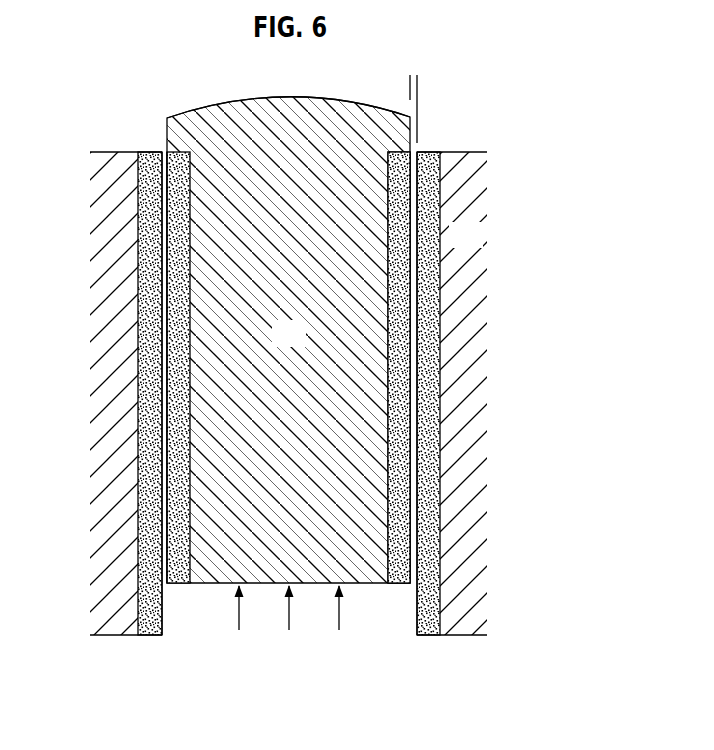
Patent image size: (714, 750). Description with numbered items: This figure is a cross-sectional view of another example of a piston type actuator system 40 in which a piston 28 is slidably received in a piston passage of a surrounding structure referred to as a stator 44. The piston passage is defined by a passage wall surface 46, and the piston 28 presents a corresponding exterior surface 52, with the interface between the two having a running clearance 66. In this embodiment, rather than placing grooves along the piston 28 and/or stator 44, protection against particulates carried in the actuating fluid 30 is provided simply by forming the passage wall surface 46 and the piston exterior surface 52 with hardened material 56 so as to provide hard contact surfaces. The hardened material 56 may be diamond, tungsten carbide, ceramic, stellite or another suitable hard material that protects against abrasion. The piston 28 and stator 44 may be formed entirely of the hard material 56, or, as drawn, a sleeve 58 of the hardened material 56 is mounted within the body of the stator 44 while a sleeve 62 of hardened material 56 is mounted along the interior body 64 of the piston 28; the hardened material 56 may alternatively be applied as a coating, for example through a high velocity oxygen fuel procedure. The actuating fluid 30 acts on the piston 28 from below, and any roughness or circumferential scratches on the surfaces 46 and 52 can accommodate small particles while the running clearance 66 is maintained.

The actuator system 40 is at (130, 92).
The piston 28 is at (243, 102).
The running clearance 66 is at (387, 84).
The sleeve 58 is at (140, 252).
The hardened material 56 is at (147, 320).
The passage wall surface 46 is at (163, 372).
The interior body 64 is at (302, 344).
The stator 44 is at (479, 245).
The sleeve 62 is at (412, 417).
The exterior surface 52 is at (412, 475).
The actuating fluid 30 is at (239, 617).